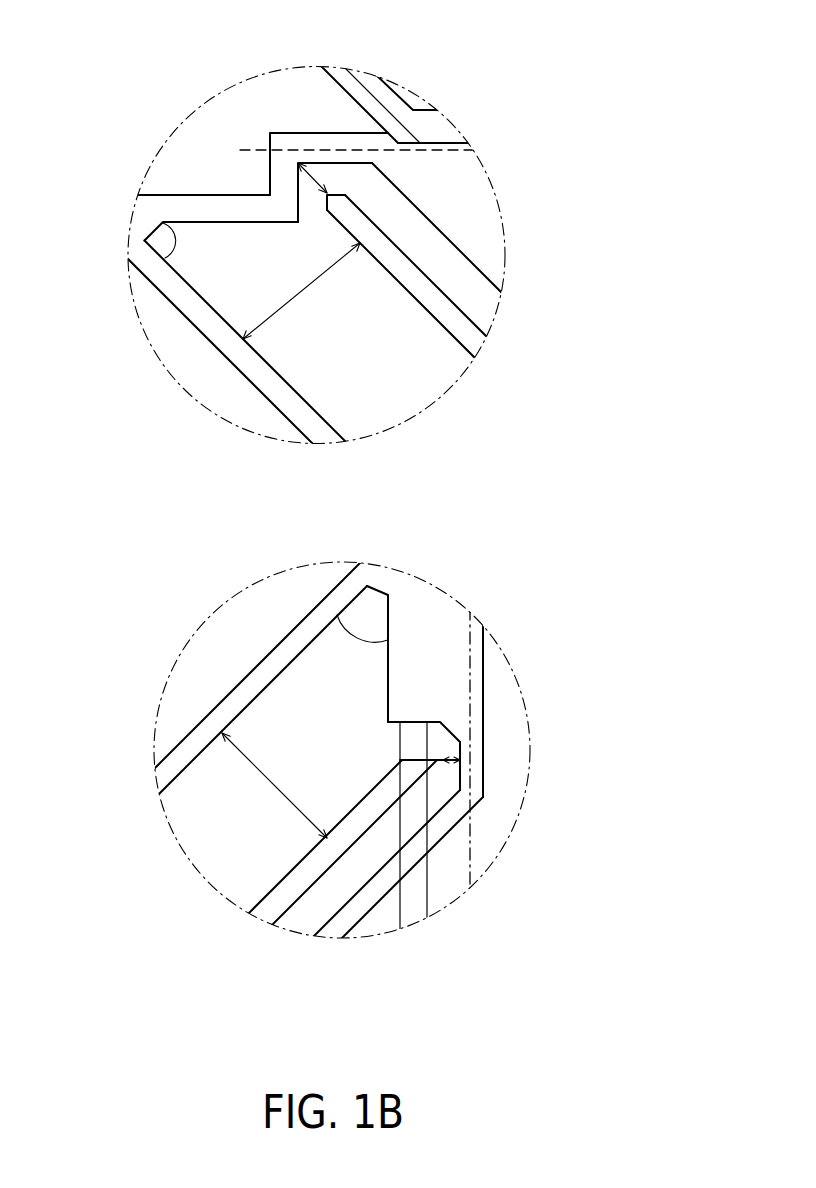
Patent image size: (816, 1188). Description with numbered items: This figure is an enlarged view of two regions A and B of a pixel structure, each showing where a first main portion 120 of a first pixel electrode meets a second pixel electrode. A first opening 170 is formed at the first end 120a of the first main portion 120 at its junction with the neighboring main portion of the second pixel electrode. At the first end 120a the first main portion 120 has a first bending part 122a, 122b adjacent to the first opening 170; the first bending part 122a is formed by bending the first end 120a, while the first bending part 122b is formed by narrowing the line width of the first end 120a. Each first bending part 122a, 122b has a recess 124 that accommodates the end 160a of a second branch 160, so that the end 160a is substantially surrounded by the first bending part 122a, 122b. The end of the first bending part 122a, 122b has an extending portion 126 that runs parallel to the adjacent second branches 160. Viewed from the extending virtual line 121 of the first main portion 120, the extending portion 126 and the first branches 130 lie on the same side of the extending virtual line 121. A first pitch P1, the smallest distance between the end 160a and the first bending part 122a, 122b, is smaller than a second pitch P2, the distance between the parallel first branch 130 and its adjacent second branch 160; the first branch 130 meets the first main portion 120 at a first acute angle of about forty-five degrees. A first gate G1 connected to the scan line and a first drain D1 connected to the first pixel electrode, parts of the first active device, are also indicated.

The first main portion 120 is at (133, 214).
The first end of the first main portion 120a is at (233, 207).
The extending virtual line 121 is at (483, 148).
The first bending part 122a is at (282, 178).
The first bending part 122b is at (467, 755).
The recess 124 is at (312, 170).
The extending portion 126 is at (458, 233).
The first branch 130 is at (267, 380).
The second branch 160 is at (470, 337).
The end of the second branch 160a is at (348, 212).
The first opening 170 is at (467, 292).
The first gate G1 is at (442, 127).
The first drain D1 is at (412, 893).
The first pitch P1 is at (443, 758).
The second pitch P2 is at (291, 540).
The region A is at (133, 166).
The region B is at (180, 640).